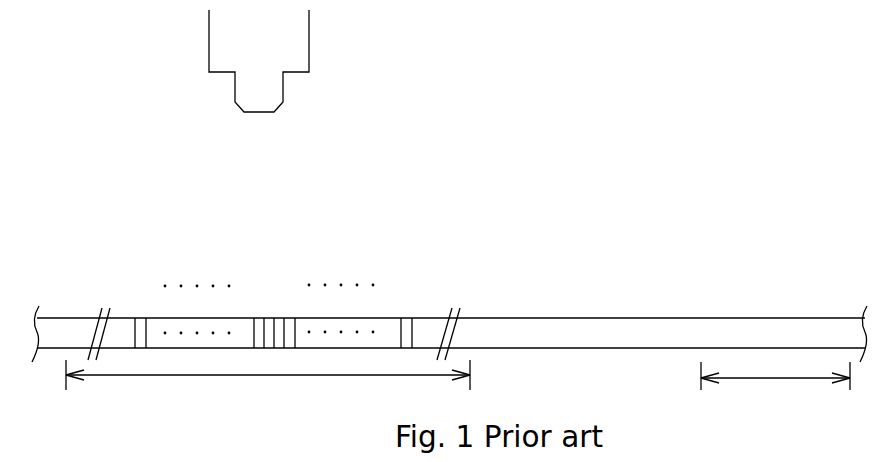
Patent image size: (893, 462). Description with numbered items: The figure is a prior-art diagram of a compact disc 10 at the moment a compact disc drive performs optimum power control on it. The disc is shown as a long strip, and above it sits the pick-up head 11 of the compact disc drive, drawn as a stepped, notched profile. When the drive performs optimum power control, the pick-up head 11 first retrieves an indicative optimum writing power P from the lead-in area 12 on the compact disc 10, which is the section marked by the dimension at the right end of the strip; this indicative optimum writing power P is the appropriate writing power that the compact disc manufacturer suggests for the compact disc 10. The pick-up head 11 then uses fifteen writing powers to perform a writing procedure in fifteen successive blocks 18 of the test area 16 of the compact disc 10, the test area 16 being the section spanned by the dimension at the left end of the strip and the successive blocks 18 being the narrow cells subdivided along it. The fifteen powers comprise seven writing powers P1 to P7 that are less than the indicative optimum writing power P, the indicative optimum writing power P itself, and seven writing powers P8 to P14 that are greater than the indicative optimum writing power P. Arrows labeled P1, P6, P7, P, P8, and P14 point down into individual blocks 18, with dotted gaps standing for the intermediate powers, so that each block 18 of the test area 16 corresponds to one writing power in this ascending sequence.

The compact disc 10 is at (673, 124).
The pick-up head 11 is at (343, 78).
The lead-in area 12 is at (775, 387).
The test area 16 is at (268, 386).
The successive blocks 18 is at (405, 339).
The writing power P1 is at (140, 316).
The writing power P6 is at (259, 316).
The writing power P7 is at (270, 316).
The indicative optimum writing power P is at (281, 316).
The writing power P8 is at (291, 316).
The writing power P14 is at (407, 316).